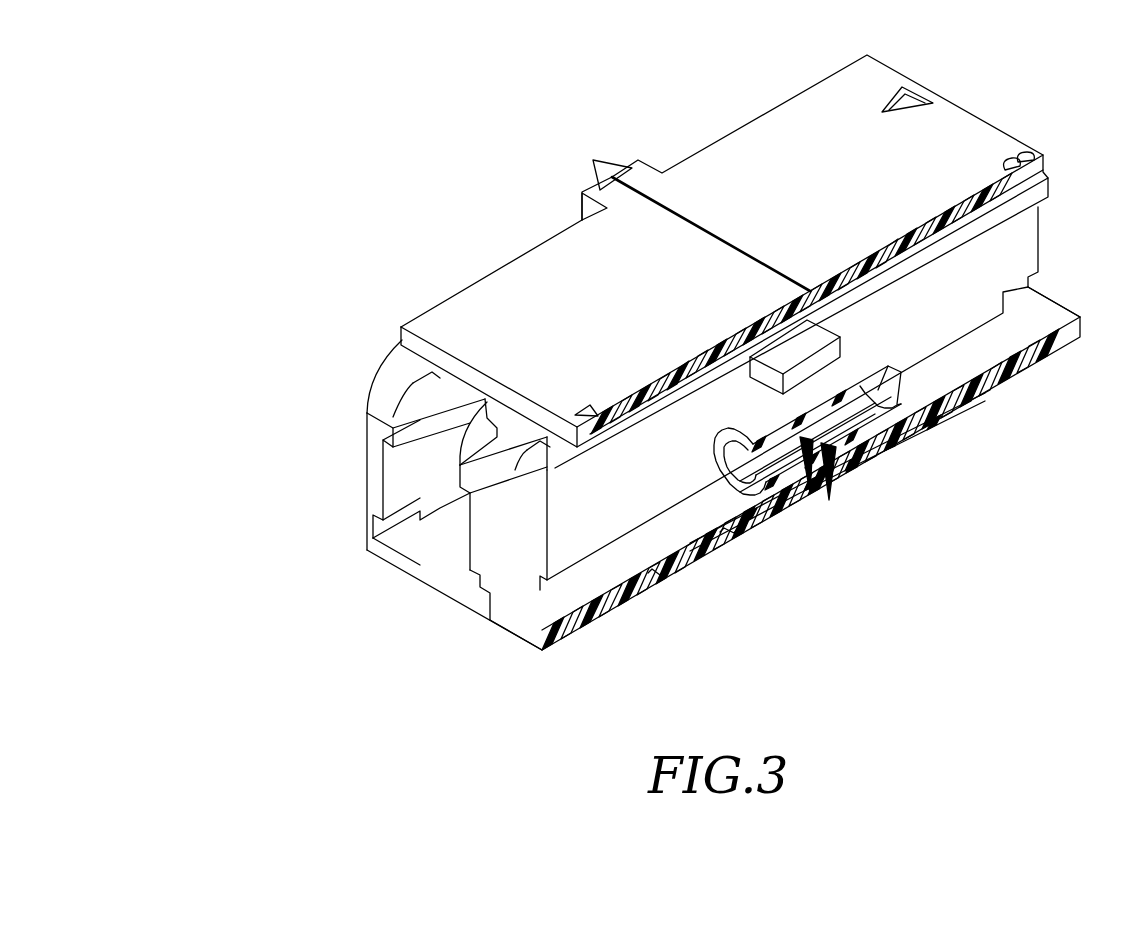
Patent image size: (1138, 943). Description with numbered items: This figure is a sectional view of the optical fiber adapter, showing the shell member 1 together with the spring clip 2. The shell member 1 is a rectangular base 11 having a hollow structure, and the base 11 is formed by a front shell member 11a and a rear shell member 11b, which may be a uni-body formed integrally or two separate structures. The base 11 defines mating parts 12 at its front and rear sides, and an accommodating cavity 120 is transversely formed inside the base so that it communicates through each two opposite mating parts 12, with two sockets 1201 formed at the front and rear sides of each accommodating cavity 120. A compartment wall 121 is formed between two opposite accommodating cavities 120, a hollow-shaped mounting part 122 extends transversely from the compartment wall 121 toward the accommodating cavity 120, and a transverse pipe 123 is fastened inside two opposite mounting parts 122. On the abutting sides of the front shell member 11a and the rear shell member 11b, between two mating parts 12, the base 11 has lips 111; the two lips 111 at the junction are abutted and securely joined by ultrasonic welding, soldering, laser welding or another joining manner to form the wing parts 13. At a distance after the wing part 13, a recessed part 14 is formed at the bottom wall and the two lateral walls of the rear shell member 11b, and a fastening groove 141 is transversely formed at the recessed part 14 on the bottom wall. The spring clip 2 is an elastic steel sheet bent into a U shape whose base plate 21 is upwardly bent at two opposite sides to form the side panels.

The shell member 1 is at (285, 443).
The base 11 is at (455, 270).
The front shell member 11a is at (557, 247).
The rear shell member 11b is at (800, 110).
The wing part 13 is at (545, 125).
The lip 111 is at (598, 165).
The mating part 12 is at (372, 463).
The accommodating cavity 120 is at (455, 527).
The socket 1201 is at (395, 497).
The compartment wall 121 is at (817, 485).
The mounting part 122 is at (845, 432).
The transverse pipe 123 is at (887, 413).
The recessed part 14 is at (687, 570).
The fastening groove 141 is at (727, 539).
The spring clip 2 is at (1030, 446).
The base plate 21 is at (952, 412).